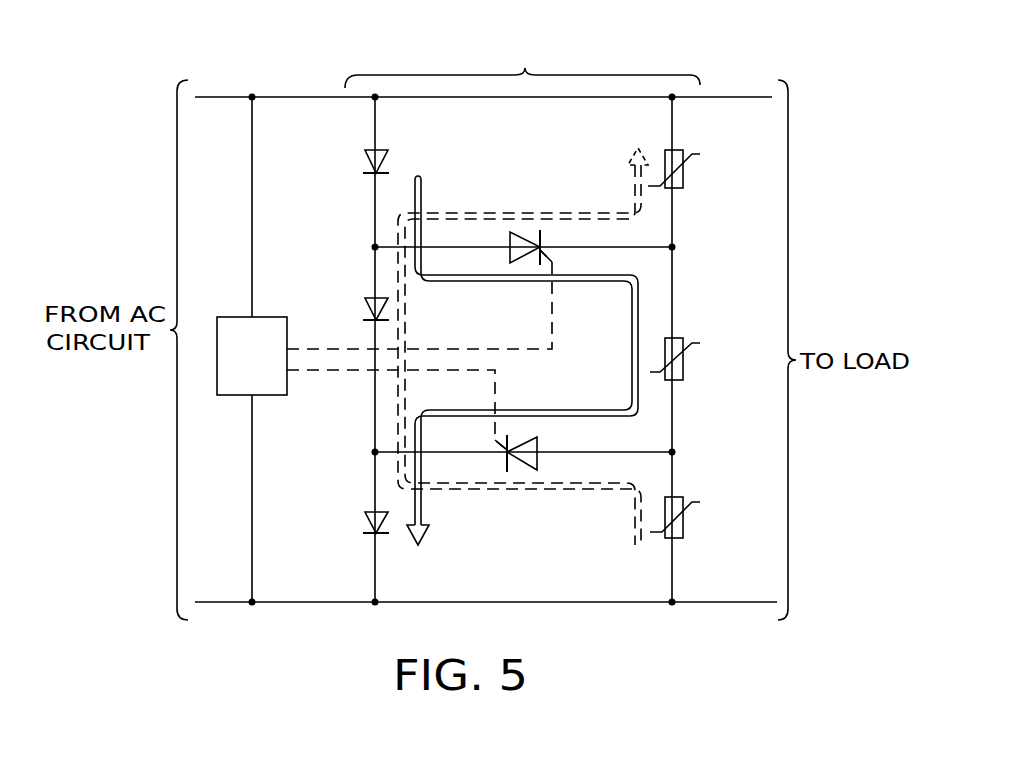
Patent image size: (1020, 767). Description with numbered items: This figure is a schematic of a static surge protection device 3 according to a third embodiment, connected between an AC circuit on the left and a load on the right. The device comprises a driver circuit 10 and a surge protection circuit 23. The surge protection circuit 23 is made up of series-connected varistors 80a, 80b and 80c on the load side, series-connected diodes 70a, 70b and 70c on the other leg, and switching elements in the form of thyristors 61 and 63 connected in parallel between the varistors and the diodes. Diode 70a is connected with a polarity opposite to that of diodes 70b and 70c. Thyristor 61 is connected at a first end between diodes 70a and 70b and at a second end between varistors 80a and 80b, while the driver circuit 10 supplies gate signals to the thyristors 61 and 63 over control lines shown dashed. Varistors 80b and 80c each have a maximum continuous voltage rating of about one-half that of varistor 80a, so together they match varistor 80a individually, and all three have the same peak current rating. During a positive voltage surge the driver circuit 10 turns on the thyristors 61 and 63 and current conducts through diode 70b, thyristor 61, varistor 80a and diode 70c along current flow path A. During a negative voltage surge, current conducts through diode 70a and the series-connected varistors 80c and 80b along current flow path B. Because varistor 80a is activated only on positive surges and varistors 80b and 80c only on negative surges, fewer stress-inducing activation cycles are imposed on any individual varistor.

The static surge protection device 3 is at (244, 52).
The driver circuit 10 is at (268, 388).
The surge protection circuit 23 is at (525, 70).
The thyristor 61 is at (522, 258).
The thyristor 63 is at (522, 466).
The diode 70a is at (365, 306).
The diode 70b is at (365, 162).
The diode 70c is at (365, 520).
The varistor 80a is at (688, 354).
The varistor 80b is at (688, 164).
The varistor 80c is at (682, 520).
The current flow path A is at (553, 406).
The current flow path B is at (566, 211).